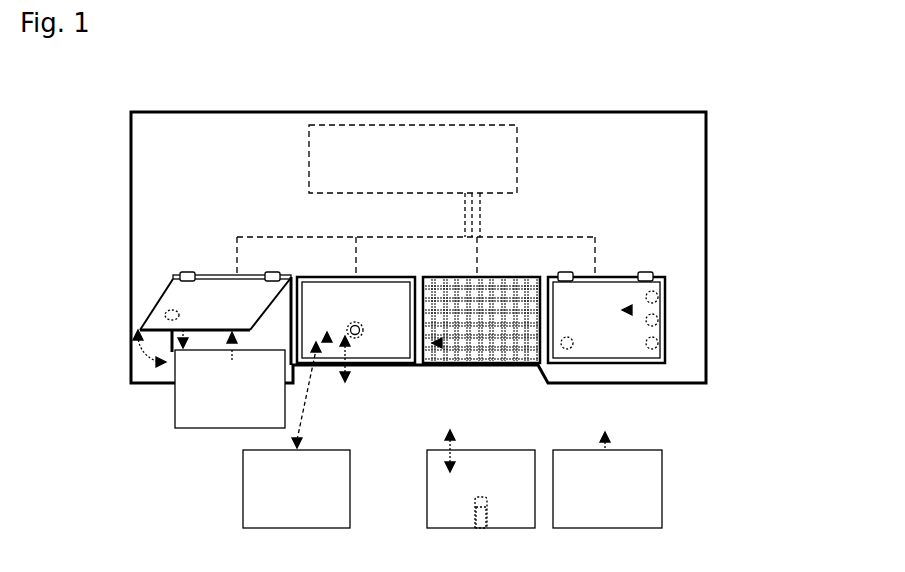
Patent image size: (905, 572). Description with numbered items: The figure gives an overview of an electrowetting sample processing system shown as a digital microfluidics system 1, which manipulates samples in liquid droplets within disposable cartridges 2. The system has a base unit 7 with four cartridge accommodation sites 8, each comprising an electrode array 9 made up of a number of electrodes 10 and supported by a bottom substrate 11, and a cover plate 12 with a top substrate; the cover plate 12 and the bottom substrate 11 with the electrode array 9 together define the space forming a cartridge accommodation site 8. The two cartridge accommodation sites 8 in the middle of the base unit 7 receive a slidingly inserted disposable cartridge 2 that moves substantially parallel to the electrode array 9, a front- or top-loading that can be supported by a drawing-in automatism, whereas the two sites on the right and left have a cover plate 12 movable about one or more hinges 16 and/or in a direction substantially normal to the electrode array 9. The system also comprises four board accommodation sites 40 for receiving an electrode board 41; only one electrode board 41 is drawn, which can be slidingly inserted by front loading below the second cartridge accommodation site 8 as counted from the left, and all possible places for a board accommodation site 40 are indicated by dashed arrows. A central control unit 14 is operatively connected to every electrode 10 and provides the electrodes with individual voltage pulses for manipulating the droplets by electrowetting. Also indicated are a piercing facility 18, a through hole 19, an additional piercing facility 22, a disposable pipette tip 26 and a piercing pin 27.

The digital microfluidics system 1 is at (738, 164).
The disposable cartridge 2 is at (418, 402).
The base unit 7 is at (400, 204).
The cartridge accommodation site 8 is at (223, 336).
The electrode array 9 is at (448, 370).
The electrode 10 is at (472, 366).
The bottom substrate 11 is at (533, 367).
The cover plate 12 is at (402, 320).
The central control unit 14 is at (416, 201).
The hinge 16 is at (180, 274).
The piercing facility 18 is at (158, 309).
The through hole 19 is at (358, 341).
The additional piercing facility 22 is at (652, 360).
The disposable pipette tip 26 is at (476, 498).
The piercing pin 27 is at (477, 510).
The board accommodation site 40 is at (156, 363).
The electrode board 41 is at (296, 435).